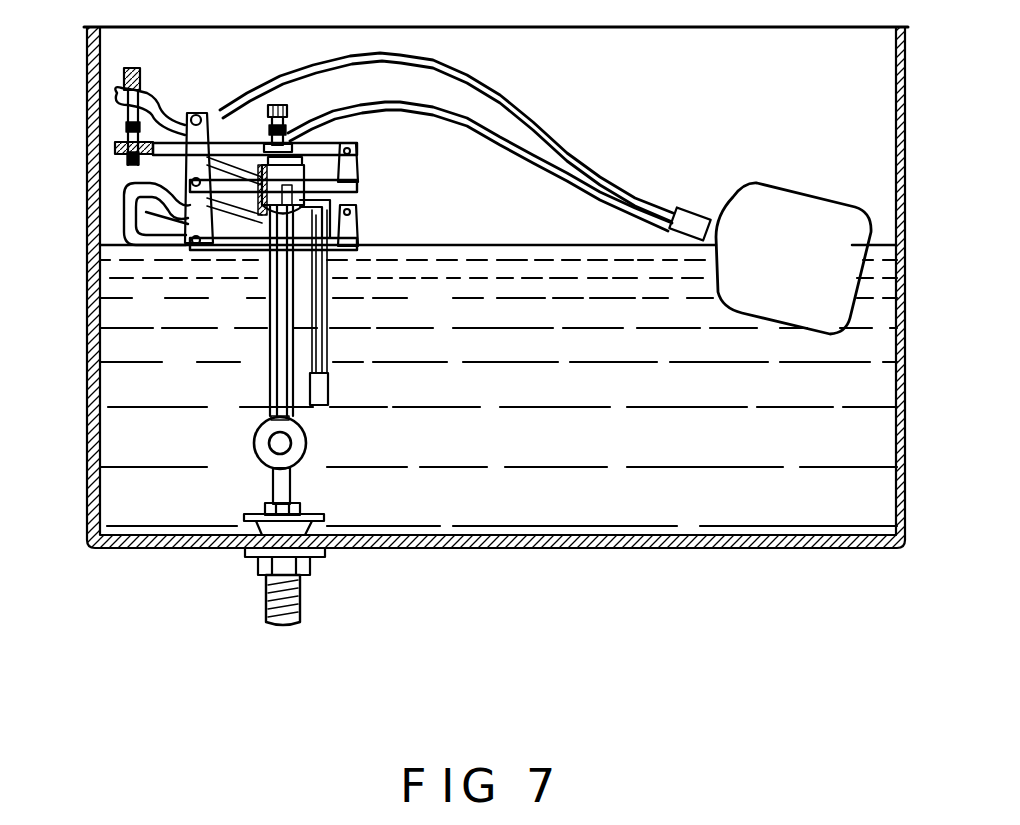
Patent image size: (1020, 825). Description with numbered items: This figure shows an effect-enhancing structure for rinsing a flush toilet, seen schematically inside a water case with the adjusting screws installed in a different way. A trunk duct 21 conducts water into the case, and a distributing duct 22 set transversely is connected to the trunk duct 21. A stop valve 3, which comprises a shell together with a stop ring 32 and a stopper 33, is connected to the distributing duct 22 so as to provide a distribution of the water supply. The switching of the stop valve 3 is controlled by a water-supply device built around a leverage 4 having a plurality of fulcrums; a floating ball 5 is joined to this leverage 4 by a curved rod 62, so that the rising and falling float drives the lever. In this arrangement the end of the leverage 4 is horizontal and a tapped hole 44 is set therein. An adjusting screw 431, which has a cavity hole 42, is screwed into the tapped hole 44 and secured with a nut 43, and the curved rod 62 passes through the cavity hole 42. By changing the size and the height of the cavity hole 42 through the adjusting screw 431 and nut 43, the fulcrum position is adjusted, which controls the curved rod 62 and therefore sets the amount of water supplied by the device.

The stop valve 3 is at (345, 168).
The leverage 4 is at (320, 137).
The floating ball 5 is at (777, 200).
The trunk duct 21 is at (290, 486).
The distributing duct 22 is at (256, 436).
The stop ring 32 is at (355, 188).
The stopper 33 is at (340, 210).
The cavity hole 42 is at (120, 88).
The nut 43 is at (275, 100).
The tapped hole 44 is at (130, 158).
The curved rod 62 is at (520, 112).
The adjusting screw 431 is at (116, 138).